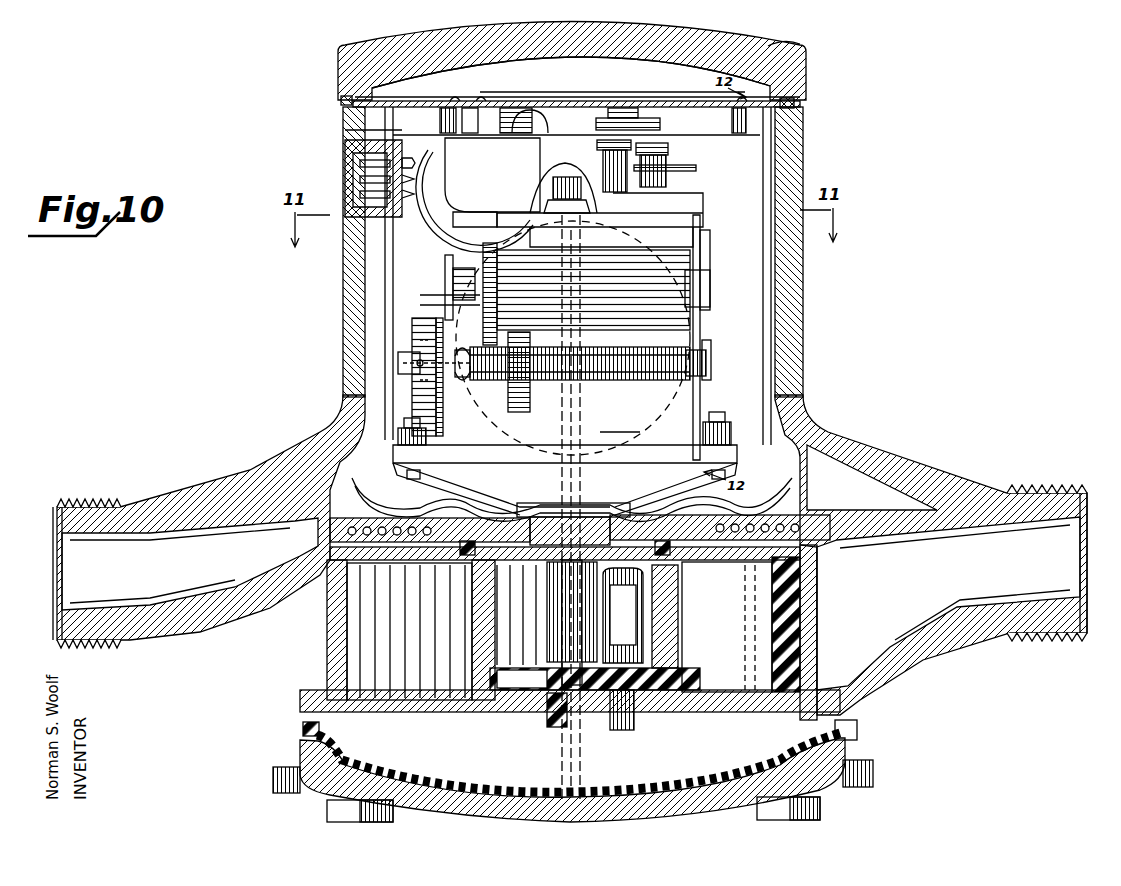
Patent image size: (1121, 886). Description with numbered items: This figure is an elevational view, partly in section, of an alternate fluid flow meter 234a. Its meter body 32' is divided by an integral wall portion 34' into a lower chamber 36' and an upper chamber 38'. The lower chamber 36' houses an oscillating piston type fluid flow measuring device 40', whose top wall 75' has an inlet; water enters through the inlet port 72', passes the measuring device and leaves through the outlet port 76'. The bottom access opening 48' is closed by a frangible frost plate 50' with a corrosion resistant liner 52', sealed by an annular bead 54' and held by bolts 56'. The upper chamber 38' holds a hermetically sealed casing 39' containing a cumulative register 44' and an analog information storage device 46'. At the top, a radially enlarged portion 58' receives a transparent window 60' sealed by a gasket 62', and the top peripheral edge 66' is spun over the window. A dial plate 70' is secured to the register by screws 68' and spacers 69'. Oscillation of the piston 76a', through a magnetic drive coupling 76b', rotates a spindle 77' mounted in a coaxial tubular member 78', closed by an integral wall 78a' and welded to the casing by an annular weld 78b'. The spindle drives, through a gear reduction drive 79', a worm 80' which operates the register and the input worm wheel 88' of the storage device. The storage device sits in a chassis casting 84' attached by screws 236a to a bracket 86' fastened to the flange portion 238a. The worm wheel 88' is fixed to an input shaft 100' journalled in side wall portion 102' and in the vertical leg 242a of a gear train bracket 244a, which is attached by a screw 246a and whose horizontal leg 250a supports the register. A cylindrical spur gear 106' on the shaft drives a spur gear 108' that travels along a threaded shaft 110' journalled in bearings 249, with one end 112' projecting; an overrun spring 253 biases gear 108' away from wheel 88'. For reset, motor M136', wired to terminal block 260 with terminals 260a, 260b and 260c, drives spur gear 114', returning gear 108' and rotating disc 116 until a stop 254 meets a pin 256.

The radially enlarged portion 58' is at (596, 61).
The transparent window 60' is at (571, 69).
The top peripheral edge 66' is at (804, 40).
The gasket 62' is at (599, 107).
The dial plate 70' is at (612, 83).
The screws 68' is at (598, 85).
The spacers 69' is at (622, 127).
The gear reduction drive 79' is at (625, 150).
The cumulative type register 44' is at (574, 276).
The hermetically sealed casing 39' is at (592, 252).
The meter body 32' is at (211, 521).
The inlet port 72' is at (34, 573).
The upper chamber 38' is at (931, 548).
The outlet port 76' is at (1101, 559).
The meter terminal block 260 is at (345, 142).
The fluid flow meter 234a is at (284, 112).
The terminal 260a is at (358, 163).
The terminal 260b is at (358, 179).
The terminal 260c is at (358, 194).
The worm 80' is at (464, 201).
The horizontally extending leg 250a is at (615, 212).
The gear train bracket 244a is at (700, 226).
The cylindrical spur gear 106' is at (607, 338).
The motor M136' is at (627, 423).
The helical gear or worm wheel 88' is at (465, 293).
The vertical side wall portion 102' is at (423, 285).
The input shaft 100' is at (433, 284).
The analog type information storage device 46' is at (440, 295).
The spur gear 114' is at (420, 368).
The disc 116 is at (415, 332).
The end of threaded shaft 112' is at (396, 355).
The overrun spring 253 is at (448, 374).
The stop 254 is at (560, 372).
The pin 256 is at (563, 357).
The threaded shaft 110' is at (600, 507).
The spur gear 108' is at (530, 384).
The vertical leg 242a is at (700, 333).
The screw 246a is at (714, 370).
The bearings 249 is at (700, 382).
The screws 236a is at (725, 420).
The chassis casting 84' is at (501, 489).
The bracket 86' is at (672, 489).
The radially extending flange portion 238a is at (665, 530).
The integral wall portion 34' is at (559, 523).
The annular weld 78b' is at (573, 526).
The lower chamber 36' is at (556, 632).
The top wall 75' is at (409, 631).
The spindle 77' is at (547, 613).
The magnetic drive coupling 76b' is at (545, 622).
The coaxial tubular member 78' is at (575, 615).
The integral wall 78a' is at (595, 699).
The fluid flow measuring device 40' is at (727, 627).
The piston 76a' is at (756, 624).
The frangible frost plate 50' is at (606, 780).
The corrosion resistant liner 52' is at (578, 762).
The bottom access opening 48' is at (278, 741).
The annular bead 54' is at (871, 734).
The bolts 56' is at (579, 791).